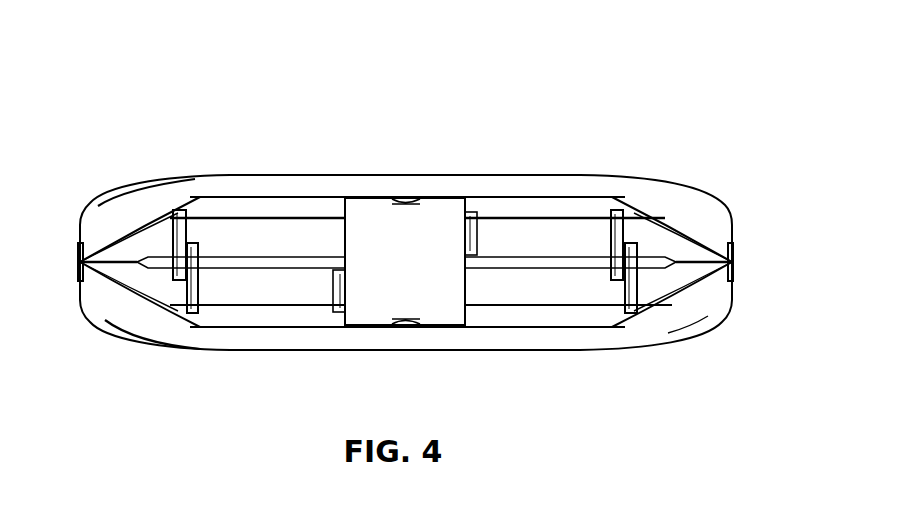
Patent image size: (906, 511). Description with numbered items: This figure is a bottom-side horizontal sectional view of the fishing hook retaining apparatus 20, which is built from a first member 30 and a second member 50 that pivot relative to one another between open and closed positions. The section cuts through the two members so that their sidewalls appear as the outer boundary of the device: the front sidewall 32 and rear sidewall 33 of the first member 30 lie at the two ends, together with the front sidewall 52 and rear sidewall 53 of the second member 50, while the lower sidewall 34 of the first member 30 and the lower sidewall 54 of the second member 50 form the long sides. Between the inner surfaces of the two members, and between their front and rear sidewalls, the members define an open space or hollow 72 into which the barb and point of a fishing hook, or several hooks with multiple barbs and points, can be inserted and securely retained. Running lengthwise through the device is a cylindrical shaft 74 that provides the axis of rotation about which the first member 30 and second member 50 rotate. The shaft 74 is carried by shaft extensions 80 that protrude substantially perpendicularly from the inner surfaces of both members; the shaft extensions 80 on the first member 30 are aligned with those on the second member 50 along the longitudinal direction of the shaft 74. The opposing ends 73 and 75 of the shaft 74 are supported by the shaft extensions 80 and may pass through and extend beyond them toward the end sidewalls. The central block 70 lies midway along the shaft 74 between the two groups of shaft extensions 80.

The fishing hook retaining apparatus 20 is at (184, 90).
The first member 30 is at (319, 375).
The front sidewall 32 is at (77, 300).
The rear sidewall 33 is at (735, 292).
The lower sidewall 34 is at (525, 333).
The second member 50 is at (445, 157).
The front sidewall 52 is at (76, 236).
The rear sidewall 53 is at (735, 222).
The lower sidewall 54 is at (535, 190).
The central hub 70 is at (370, 263).
The hollow 72 is at (310, 248).
The opposing end 73 is at (143, 258).
The cylindrical shaft 74 is at (230, 260).
The opposing end 75 is at (667, 256).
The shaft extension 80 is at (183, 212).